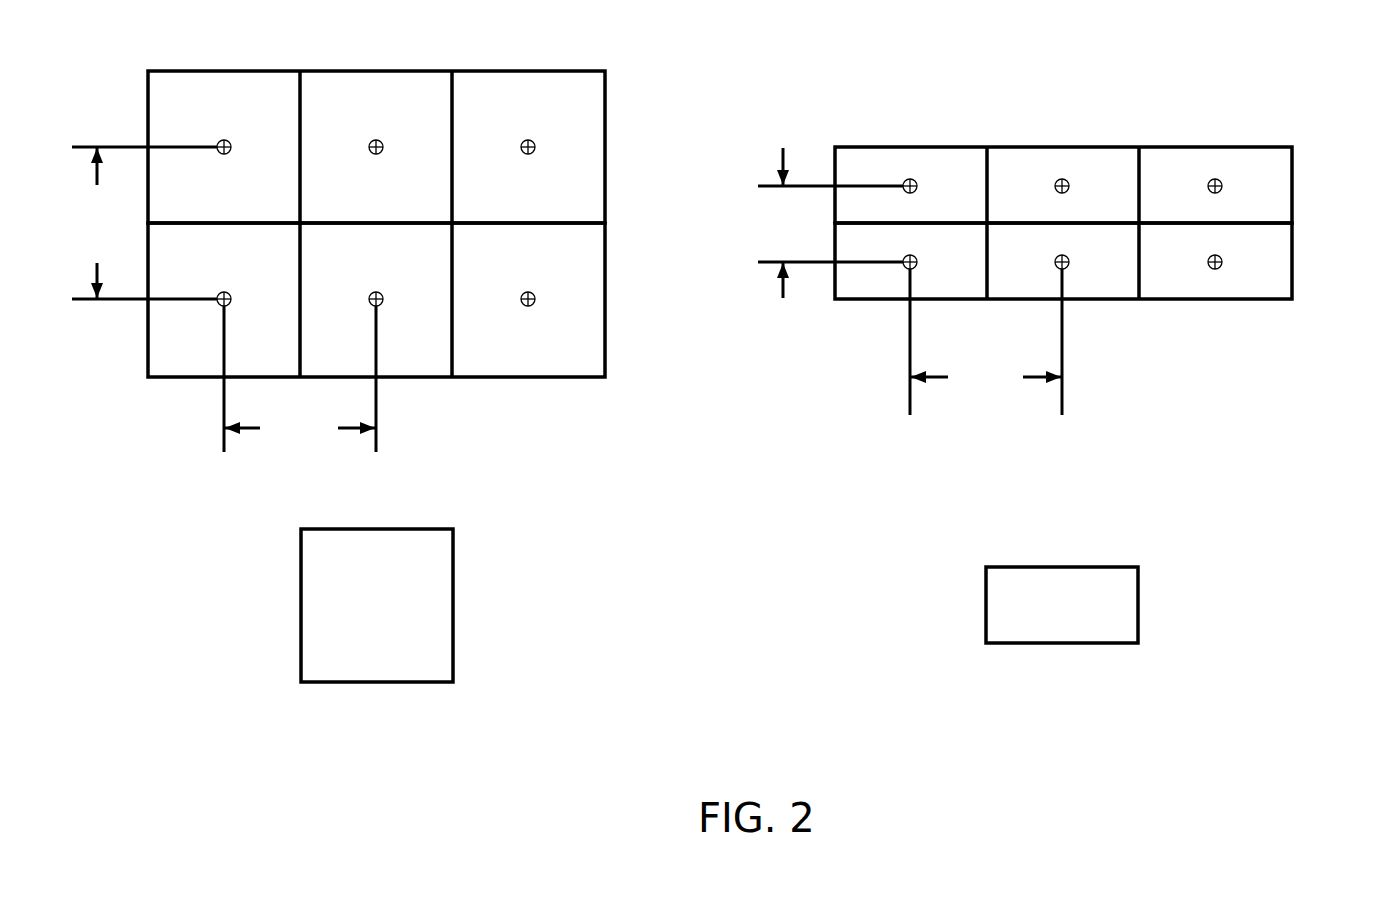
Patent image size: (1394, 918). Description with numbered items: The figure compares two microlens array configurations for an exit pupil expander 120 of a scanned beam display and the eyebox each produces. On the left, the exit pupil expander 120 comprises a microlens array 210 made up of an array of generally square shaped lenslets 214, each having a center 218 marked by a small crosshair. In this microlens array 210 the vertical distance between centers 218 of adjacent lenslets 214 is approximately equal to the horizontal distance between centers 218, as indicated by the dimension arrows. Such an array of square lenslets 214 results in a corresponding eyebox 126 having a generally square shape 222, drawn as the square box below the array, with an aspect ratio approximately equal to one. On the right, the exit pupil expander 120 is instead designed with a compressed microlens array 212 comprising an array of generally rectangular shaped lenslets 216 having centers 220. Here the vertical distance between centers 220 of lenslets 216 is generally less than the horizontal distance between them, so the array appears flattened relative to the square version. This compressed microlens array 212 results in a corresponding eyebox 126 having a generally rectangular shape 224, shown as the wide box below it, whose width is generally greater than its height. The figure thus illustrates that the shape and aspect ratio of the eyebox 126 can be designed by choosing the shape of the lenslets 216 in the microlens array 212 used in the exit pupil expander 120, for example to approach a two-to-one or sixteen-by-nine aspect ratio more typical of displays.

The exit pupil expander 120 is at (727, 226).
The microlens array 210 is at (605, 97).
The square shaped lenslets 214 is at (605, 147).
The compressed microlens array 212 is at (1292, 171).
The rectangular shaped lenslets 216 is at (1292, 261).
The centers 218 is at (224, 140).
The centers 220 is at (910, 179).
The eyebox 126 is at (765, 595).
The square shape 222 is at (453, 603).
The rectangular shape 224 is at (1138, 625).